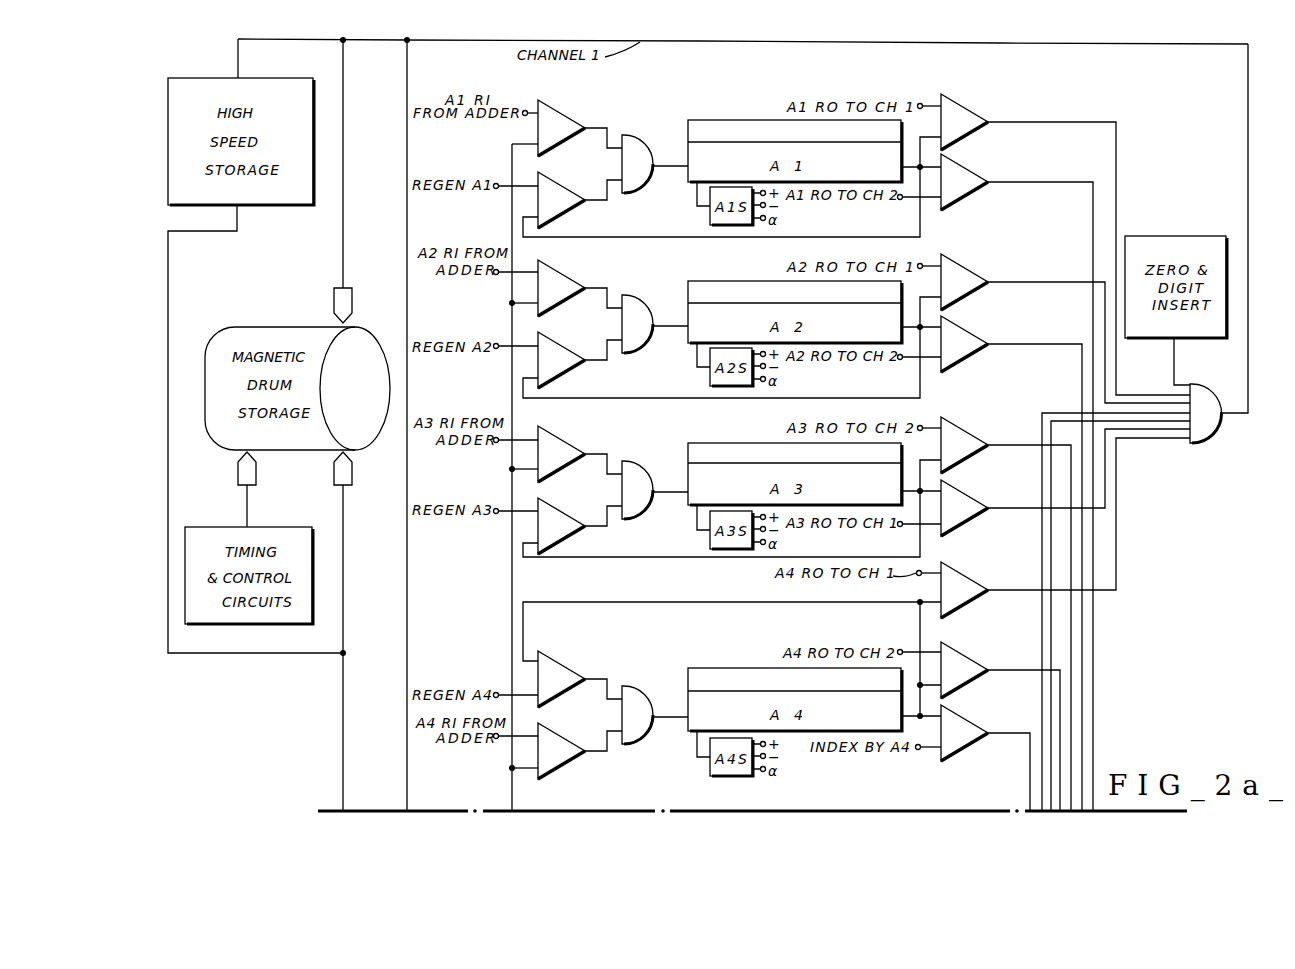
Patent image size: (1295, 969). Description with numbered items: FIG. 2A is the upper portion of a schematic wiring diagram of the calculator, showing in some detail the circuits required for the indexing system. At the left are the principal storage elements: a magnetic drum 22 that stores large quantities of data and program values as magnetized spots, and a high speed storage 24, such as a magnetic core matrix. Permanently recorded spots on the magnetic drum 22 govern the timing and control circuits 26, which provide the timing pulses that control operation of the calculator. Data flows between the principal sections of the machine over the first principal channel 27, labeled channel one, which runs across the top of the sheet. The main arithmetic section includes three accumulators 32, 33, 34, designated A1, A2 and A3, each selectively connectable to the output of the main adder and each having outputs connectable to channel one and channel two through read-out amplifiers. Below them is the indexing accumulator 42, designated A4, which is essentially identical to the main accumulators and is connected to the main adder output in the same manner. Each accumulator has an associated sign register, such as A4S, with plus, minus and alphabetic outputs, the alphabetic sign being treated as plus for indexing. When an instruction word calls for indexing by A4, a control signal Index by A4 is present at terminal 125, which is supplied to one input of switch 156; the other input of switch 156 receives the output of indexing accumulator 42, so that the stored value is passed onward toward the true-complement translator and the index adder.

The magnetic drum 22 is at (255, 326).
The high speed storage 24 is at (205, 206).
The timing and control circuits 26 is at (207, 626).
The first principal channel 27 is at (840, 43).
The accumulator A1 32 is at (712, 121).
The accumulator A2 33 is at (712, 282).
The accumulator A3 34 is at (712, 444).
The indexing accumulator A4 42 is at (714, 668).
The Index by A4 terminal 125 is at (921, 751).
The switch 156 is at (945, 754).